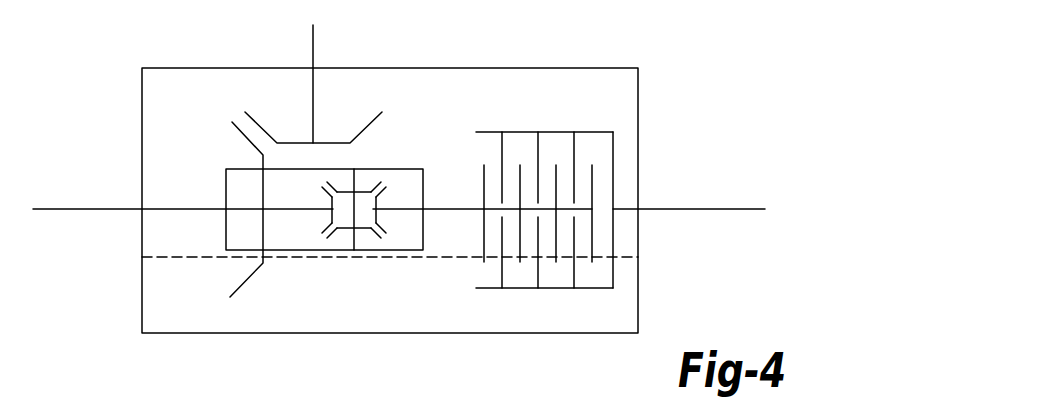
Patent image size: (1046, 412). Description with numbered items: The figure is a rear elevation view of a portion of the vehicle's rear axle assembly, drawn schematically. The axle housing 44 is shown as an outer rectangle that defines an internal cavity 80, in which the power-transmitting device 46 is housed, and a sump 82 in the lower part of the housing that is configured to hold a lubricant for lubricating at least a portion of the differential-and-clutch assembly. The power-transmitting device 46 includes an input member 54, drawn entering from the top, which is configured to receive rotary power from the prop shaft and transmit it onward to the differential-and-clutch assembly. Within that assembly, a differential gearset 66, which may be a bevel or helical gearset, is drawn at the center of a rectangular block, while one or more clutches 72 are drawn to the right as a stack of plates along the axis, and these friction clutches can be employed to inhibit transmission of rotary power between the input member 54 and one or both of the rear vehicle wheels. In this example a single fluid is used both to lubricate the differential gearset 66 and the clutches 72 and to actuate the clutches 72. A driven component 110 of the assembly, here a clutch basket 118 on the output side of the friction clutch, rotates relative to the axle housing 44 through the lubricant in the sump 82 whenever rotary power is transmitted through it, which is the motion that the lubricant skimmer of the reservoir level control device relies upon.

The axle housing 44 is at (503, 68).
The power-transmitting device 46 is at (343, 197).
The input member 54 is at (313, 35).
The differential gearset 66 is at (402, 230).
The clutches 72 is at (611, 197).
The internal cavity 80 is at (627, 92).
The sump 82 is at (177, 311).
The driven component 110 is at (680, 210).
The clutch basket 118 is at (613, 275).